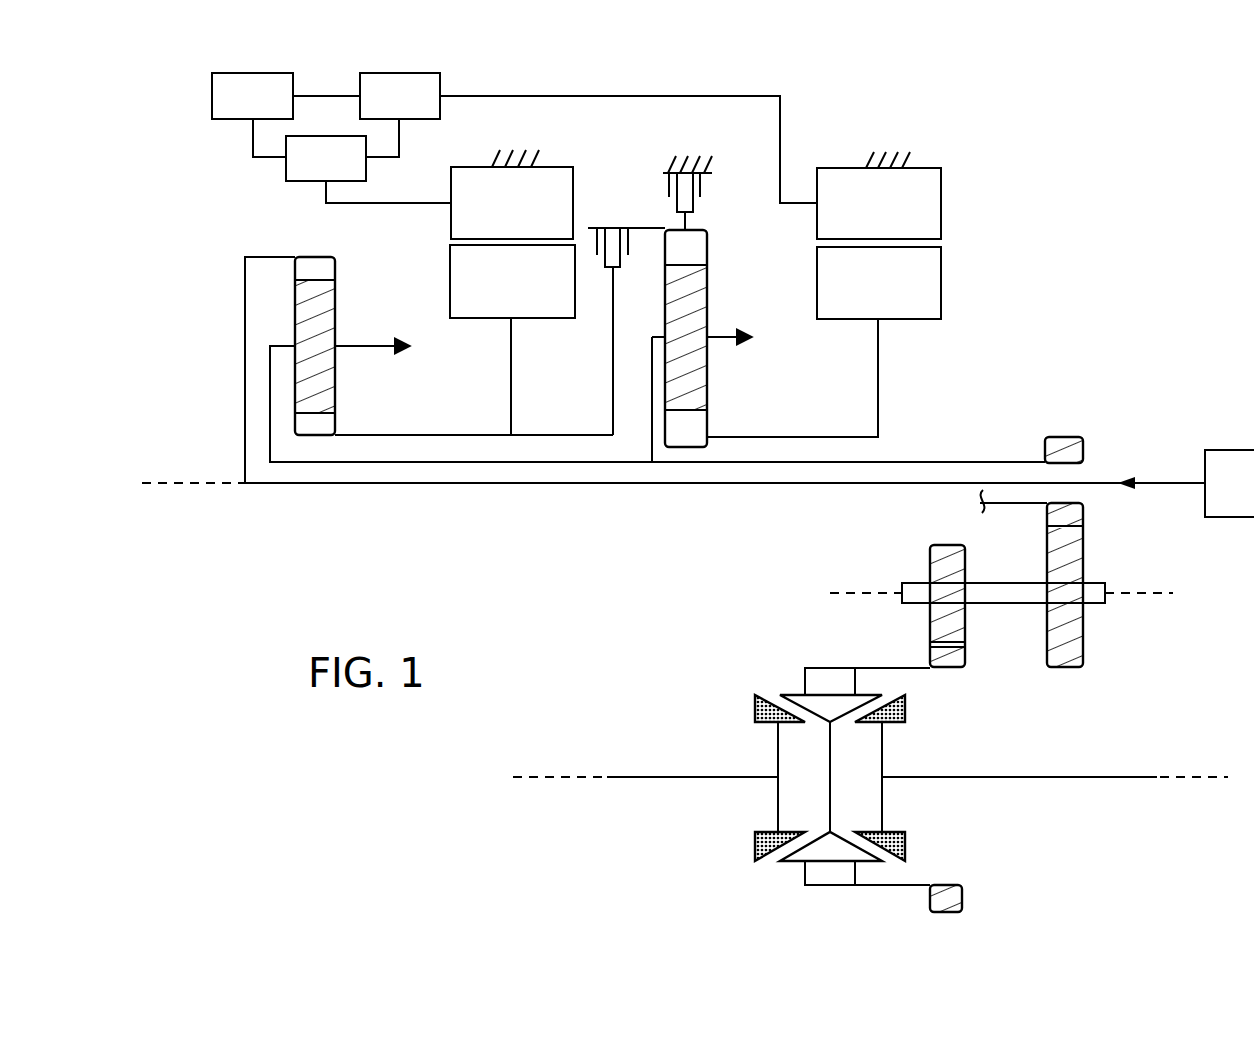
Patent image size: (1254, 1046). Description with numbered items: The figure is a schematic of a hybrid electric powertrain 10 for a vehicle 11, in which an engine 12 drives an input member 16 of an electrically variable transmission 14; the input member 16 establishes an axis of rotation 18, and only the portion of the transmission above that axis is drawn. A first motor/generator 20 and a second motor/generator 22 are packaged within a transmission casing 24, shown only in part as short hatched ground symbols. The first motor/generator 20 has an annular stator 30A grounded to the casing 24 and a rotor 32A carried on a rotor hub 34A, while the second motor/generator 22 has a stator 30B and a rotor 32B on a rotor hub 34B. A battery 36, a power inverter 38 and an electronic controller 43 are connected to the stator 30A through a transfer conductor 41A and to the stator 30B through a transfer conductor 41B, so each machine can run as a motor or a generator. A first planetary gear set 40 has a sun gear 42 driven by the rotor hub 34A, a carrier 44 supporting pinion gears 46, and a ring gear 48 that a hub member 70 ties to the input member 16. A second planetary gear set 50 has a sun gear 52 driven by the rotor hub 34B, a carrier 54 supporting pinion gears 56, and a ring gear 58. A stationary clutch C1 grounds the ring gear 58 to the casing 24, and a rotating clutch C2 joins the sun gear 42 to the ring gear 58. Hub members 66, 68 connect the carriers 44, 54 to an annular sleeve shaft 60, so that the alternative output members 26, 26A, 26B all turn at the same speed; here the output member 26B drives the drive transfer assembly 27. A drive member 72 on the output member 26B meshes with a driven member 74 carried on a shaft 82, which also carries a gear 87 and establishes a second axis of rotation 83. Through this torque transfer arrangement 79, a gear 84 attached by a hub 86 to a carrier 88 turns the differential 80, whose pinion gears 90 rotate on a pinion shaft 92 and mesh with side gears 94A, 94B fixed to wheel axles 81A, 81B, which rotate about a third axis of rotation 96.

The powertrain 10 is at (1059, 189).
The vehicle 11 is at (1020, 104).
The engine 12 is at (1229, 483).
The electrically variable transmission 14 is at (226, 160).
The input member 16 is at (795, 483).
The axis of rotation 18 is at (185, 483).
The first motor/generator 20 is at (433, 236).
The second motor/generator 22 is at (975, 249).
The transmission casing 24 is at (540, 158).
The transmission output member 26 is at (352, 346).
The transmission output member 26A is at (735, 337).
The transmission output member 26B is at (1003, 462).
The drive transfer assembly 27 is at (1159, 650).
The stator 30A is at (512, 203).
The stator 30B is at (879, 203).
The rotor 32A is at (512, 281).
The rotor 32B is at (879, 283).
The rotor hub 34A is at (511, 405).
The rotor hub 34B is at (878, 402).
The battery 36 is at (212, 96).
The power inverter 38 is at (302, 181).
The first planetary gear set 40 is at (422, 387).
The transfer conductor 41A is at (408, 203).
The transfer conductor 41B is at (613, 96).
The sun gear 42 is at (338, 425).
The electronic controller 43 is at (440, 90).
The carrier 44 is at (283, 342).
The pinion gears 46 is at (338, 395).
The ring gear 48 is at (335, 265).
The second planetary gear set 50 is at (747, 381).
The sun gear 52 is at (712, 445).
The carrier 54 is at (660, 337).
The pinion gears 56 is at (707, 302).
The ring gear 58 is at (707, 240).
The sleeve shaft 60 is at (572, 463).
The hub member 66 is at (268, 425).
The hub member 68 is at (652, 403).
The hub member 70 is at (245, 363).
The drive member 72 is at (1063, 437).
The driven member 74 is at (1085, 550).
The torque transfer arrangement 79 is at (1089, 730).
The differential 80 is at (744, 645).
The wheel axle 81A is at (657, 777).
The wheel axle 81B is at (1133, 777).
The shaft 82 is at (1018, 583).
The second axis of rotation 83 is at (860, 593).
The gear 84 is at (965, 660).
The hub 86 is at (897, 667).
The gear 87 is at (965, 620).
The carrier 88 is at (808, 670).
The pinion gears 90 is at (806, 690).
The pinion shaft 92 is at (830, 785).
The side gear 94A is at (755, 707).
The side gear 94B is at (895, 718).
The third axis of rotation 96 is at (537, 777).
The stationary-type clutch C1 is at (722, 182).
The rotating-type clutch C2 is at (590, 243).